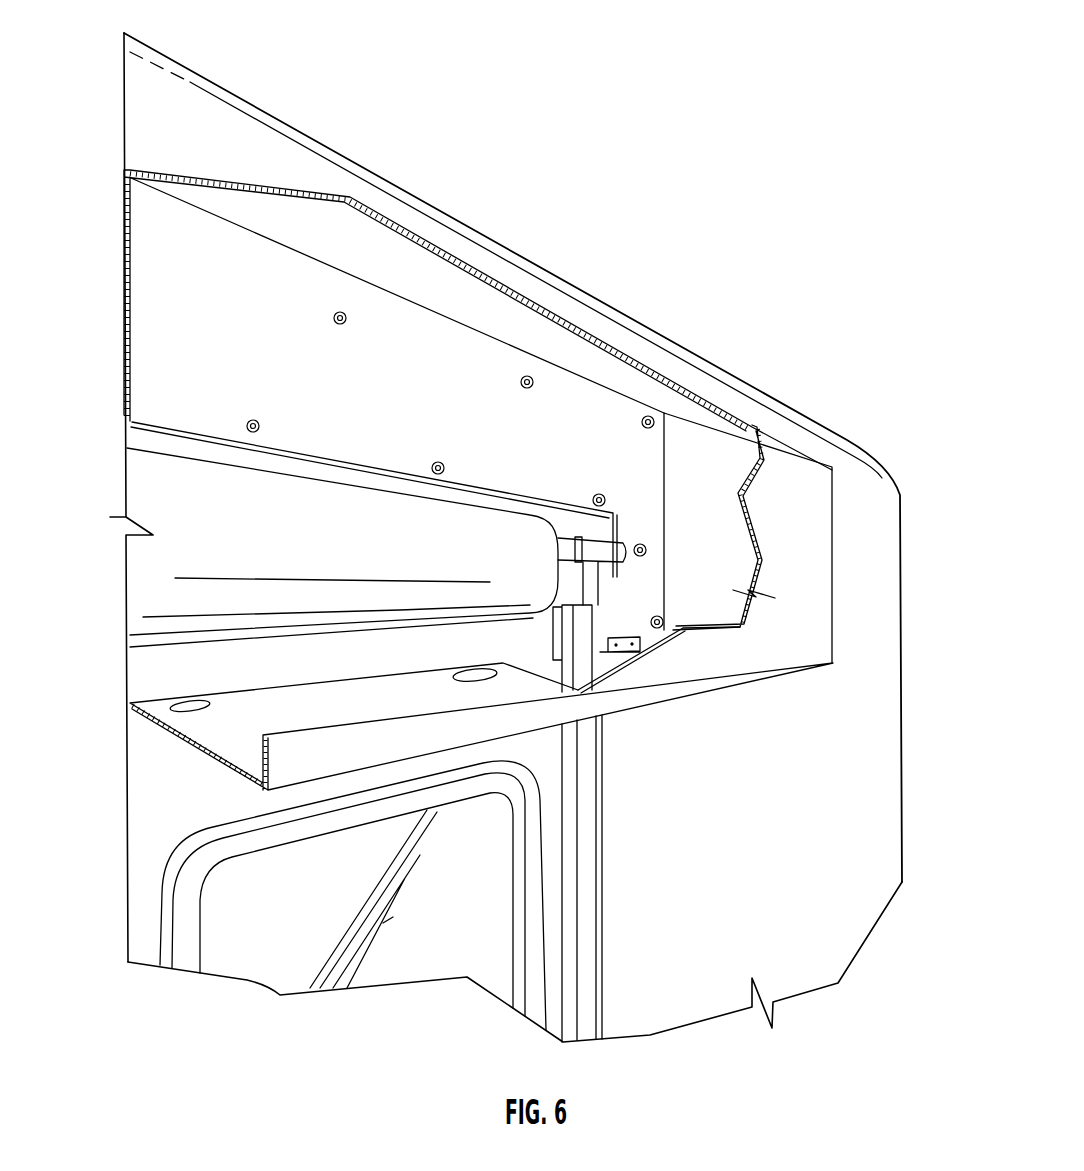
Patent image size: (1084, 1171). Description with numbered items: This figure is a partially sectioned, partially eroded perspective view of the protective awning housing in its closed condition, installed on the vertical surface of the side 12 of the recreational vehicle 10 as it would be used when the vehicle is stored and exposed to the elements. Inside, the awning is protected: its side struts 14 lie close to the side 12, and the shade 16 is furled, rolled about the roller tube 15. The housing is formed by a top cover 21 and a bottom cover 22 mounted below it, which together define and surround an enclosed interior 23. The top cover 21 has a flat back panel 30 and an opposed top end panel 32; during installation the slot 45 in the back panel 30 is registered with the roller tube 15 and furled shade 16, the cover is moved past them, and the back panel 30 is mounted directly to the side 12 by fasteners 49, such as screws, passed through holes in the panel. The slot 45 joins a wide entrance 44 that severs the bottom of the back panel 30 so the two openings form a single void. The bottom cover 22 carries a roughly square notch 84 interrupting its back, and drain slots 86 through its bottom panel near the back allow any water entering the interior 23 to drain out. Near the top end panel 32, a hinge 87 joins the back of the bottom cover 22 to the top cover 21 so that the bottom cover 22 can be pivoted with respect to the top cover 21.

The recreational vehicle 10 is at (217, 104).
The side 12 is at (182, 476).
The side struts 14 is at (587, 853).
The roller tube 15 is at (622, 547).
The shade 16 is at (342, 498).
The top cover 21 is at (480, 271).
The bottom cover 22 is at (799, 664).
The enclosed interior 23 is at (716, 527).
The back panel 30 is at (150, 295).
The top end panel 32 is at (728, 455).
The entrance 44 is at (535, 628).
The slot 45 is at (565, 515).
The fasteners 49 is at (351, 322).
The notch 84 is at (550, 663).
The drain slots 86 is at (200, 700).
The hinge 87 is at (640, 632).